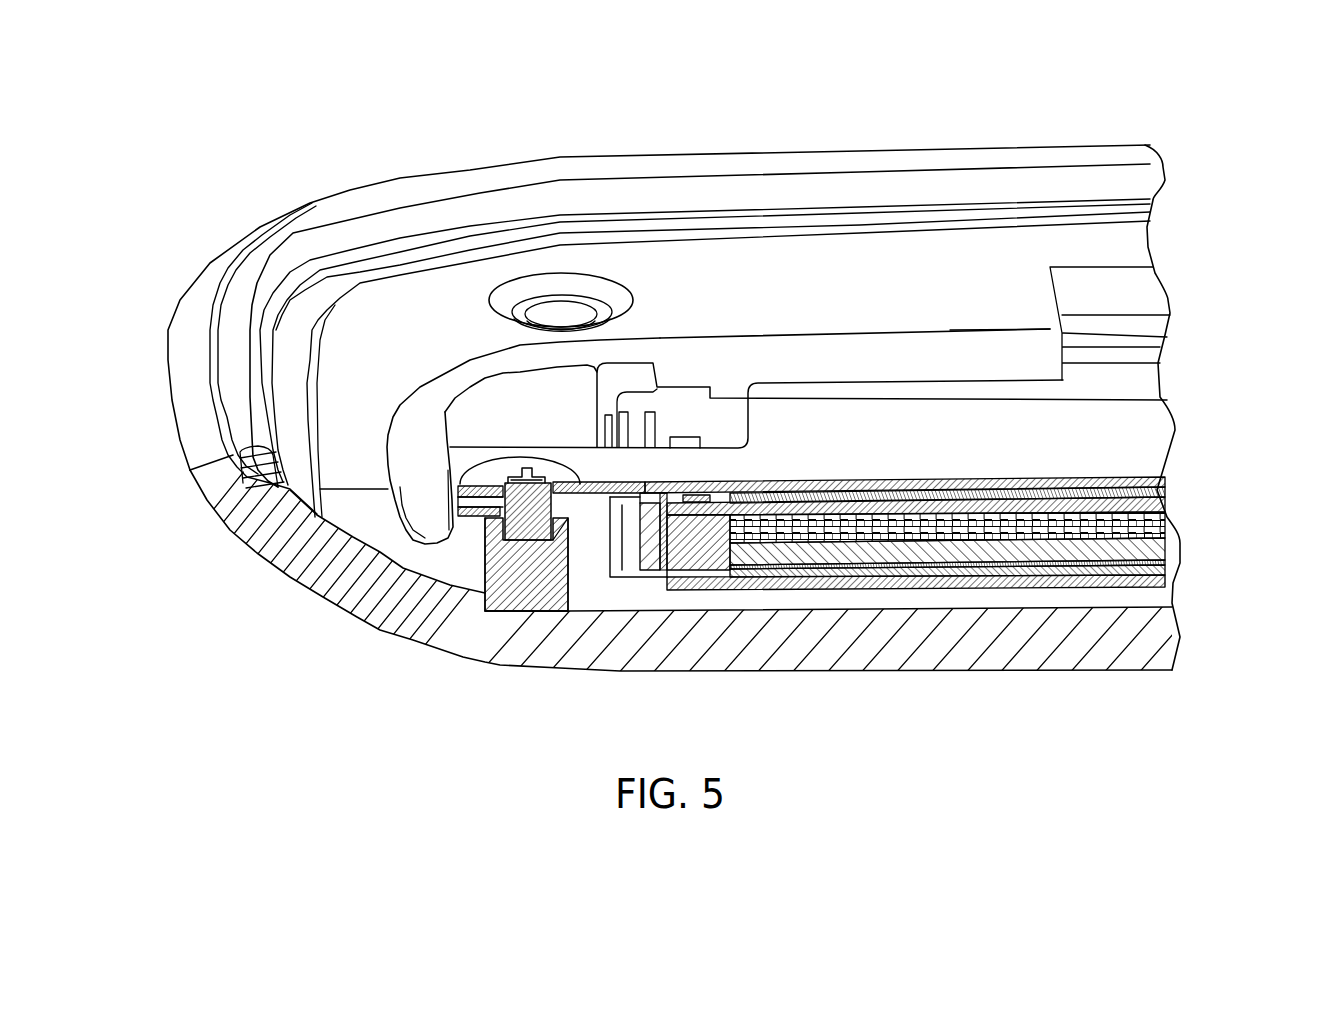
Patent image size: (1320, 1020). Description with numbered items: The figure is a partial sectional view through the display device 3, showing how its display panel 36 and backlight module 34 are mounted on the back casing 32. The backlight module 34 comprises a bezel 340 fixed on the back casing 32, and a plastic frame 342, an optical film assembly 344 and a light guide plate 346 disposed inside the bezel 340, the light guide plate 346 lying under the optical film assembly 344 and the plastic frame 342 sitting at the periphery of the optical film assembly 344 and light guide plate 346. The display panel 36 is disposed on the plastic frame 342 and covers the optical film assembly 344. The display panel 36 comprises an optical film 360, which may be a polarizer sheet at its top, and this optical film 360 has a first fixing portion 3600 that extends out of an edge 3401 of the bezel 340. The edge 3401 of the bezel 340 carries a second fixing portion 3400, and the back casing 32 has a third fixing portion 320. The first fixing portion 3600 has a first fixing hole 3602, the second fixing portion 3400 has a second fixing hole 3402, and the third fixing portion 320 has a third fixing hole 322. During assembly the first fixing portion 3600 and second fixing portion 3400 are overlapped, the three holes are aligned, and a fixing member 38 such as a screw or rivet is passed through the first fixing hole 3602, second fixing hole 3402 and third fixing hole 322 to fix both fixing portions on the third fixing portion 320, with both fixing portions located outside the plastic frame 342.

The display device 3 is at (1062, 108).
The back casing 32 is at (240, 512).
The third fixing portion 320 is at (548, 560).
The third fixing hole 322 is at (517, 542).
The backlight module 34 is at (807, 585).
The bezel 340 is at (640, 579).
The second fixing portion 3400 is at (460, 515).
The edge 3401 is at (612, 522).
The second fixing hole 3402 is at (486, 521).
The plastic frame 342 is at (690, 540).
The optical film assembly 344 is at (1180, 503).
The light guide plate 346 is at (883, 590).
The display panel 36 is at (865, 418).
The optical film 360 is at (663, 465).
The first fixing portion 3600 is at (447, 440).
The first fixing hole 3602 is at (508, 478).
The fixing member 38 is at (525, 478).